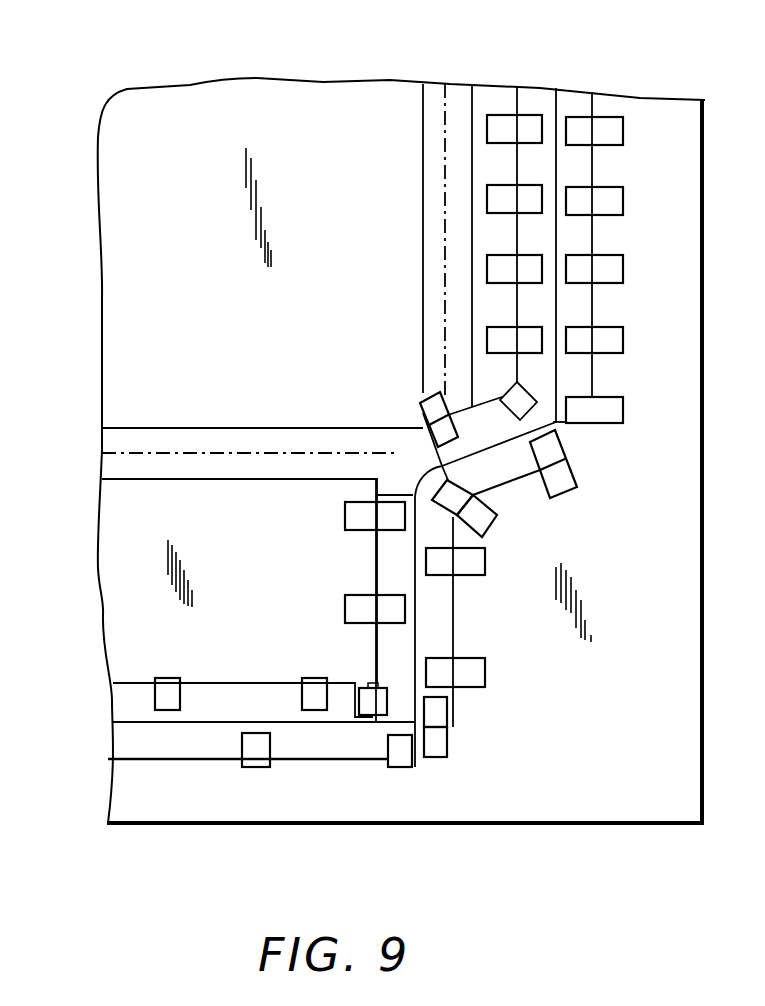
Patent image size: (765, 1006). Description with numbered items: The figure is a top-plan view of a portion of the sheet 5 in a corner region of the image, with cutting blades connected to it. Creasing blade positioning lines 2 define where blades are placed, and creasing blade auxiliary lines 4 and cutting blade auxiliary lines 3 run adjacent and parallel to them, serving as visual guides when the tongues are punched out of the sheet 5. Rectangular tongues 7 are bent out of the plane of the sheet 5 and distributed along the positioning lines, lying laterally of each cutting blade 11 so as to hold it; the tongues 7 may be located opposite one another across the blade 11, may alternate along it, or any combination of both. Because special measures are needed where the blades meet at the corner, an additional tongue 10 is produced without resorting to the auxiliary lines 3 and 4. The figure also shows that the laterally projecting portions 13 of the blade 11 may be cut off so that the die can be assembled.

The sheet 5 is at (223, 105).
The creasing blade auxiliary lines 4 is at (455, 112).
The creasing blade positioning lines 2 is at (466, 100).
The laterally projecting portions 13 is at (493, 97).
The rectangular tongues 7 is at (582, 125).
The cutting blade auxiliary lines 3 is at (375, 497).
The cutting blade 11 is at (502, 447).
The additional tongue 10 is at (438, 750).